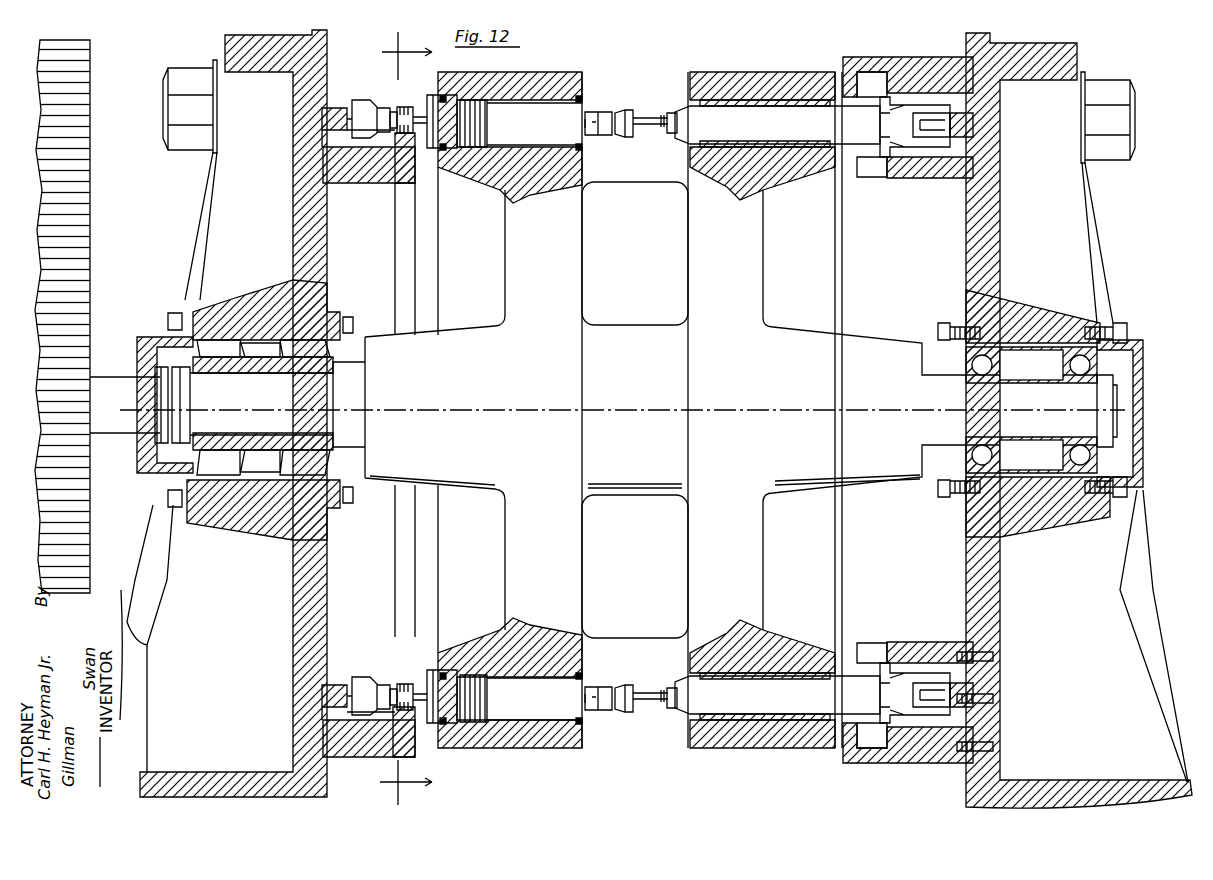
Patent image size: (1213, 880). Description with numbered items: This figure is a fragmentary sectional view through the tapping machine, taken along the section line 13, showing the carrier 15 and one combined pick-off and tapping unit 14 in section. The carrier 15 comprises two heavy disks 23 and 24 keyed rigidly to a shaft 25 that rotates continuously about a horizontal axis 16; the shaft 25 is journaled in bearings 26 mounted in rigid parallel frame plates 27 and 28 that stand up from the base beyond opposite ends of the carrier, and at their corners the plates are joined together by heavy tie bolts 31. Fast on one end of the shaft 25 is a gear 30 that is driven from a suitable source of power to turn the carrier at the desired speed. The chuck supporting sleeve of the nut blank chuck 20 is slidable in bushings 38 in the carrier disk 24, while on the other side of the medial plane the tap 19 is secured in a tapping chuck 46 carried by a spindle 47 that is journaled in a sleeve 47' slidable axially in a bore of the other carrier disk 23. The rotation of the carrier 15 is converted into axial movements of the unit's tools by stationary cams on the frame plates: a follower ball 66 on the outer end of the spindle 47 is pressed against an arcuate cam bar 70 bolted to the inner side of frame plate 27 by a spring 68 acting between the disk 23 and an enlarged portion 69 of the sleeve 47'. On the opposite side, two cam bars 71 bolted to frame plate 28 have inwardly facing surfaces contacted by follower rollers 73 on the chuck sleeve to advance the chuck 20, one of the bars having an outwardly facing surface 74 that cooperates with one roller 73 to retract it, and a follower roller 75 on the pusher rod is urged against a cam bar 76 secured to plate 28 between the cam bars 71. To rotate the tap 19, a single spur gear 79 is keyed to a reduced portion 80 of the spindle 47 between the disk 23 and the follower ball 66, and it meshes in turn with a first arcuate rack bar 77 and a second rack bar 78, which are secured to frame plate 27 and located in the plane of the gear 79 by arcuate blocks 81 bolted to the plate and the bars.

The cylindrical path section 13 is at (410, 418).
The combined pick-off and tapping unit 14 is at (655, 105).
The carrier 15 is at (758, 71).
The axis 16 is at (622, 412).
The tap 19 is at (656, 124).
The nut blank chuck 20 is at (668, 137).
The carrier disk 23 is at (527, 78).
The carrier disk 24 is at (795, 85).
The shaft 25 is at (115, 380).
The bearings 26 is at (197, 347).
The frame plate 27 is at (327, 276).
The frame plate 28 is at (968, 278).
The gear 30 is at (85, 292).
The tie bolts 31 is at (168, 113).
The bushings 38 is at (688, 108).
The tapping chuck 46 is at (624, 133).
The spindle 47 is at (599, 411).
The sleeve 47' is at (599, 429).
The follower ball 66 is at (353, 100).
The spring 68 is at (488, 121).
The enlarged portion 69 is at (438, 97).
The cam bar 70 is at (338, 685).
The cam bars 71 is at (925, 65).
The follower rollers 73 is at (870, 78).
The outwardly facing surface 74 is at (855, 90).
The follower roller 75 is at (938, 118).
The cam bar 76 is at (962, 137).
The first rack bar 77 is at (416, 158).
The second rack bar 78 is at (413, 743).
The gear means 79 is at (408, 107).
The reduced portion 80 is at (393, 110).
The arcuate blocks 81 is at (367, 183).